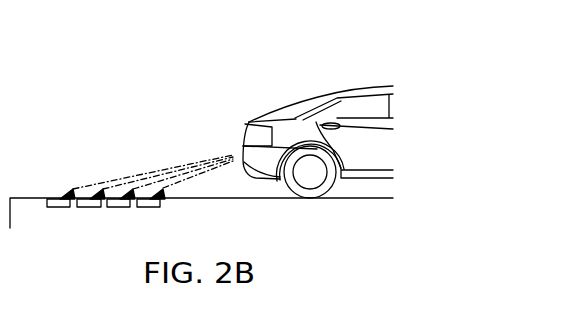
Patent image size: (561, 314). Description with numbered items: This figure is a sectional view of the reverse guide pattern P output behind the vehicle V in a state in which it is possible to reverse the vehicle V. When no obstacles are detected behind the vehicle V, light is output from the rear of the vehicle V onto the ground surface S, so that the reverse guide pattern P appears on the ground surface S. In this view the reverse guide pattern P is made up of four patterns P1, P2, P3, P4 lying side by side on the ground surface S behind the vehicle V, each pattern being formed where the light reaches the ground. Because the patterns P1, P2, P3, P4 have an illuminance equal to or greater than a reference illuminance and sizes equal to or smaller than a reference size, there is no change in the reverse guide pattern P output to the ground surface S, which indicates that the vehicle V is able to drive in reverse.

The vehicle V is at (249, 122).
The ground surface S is at (207, 197).
The reverse guide pattern P is at (132, 120).
The pattern P1 is at (148, 198).
The pattern P2 is at (118, 198).
The pattern P3 is at (87, 198).
The pattern P4 is at (58, 198).